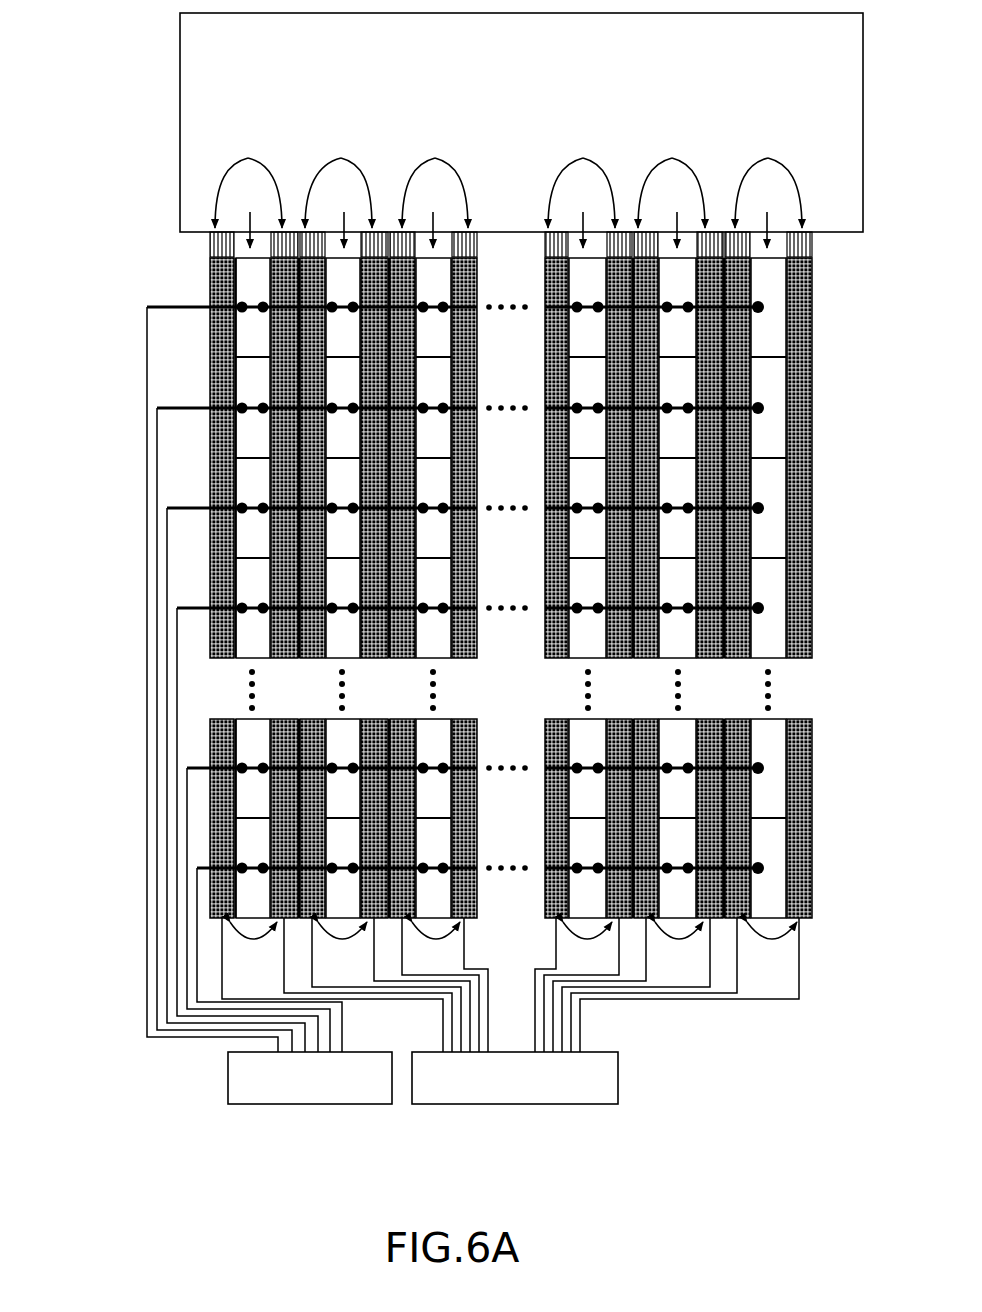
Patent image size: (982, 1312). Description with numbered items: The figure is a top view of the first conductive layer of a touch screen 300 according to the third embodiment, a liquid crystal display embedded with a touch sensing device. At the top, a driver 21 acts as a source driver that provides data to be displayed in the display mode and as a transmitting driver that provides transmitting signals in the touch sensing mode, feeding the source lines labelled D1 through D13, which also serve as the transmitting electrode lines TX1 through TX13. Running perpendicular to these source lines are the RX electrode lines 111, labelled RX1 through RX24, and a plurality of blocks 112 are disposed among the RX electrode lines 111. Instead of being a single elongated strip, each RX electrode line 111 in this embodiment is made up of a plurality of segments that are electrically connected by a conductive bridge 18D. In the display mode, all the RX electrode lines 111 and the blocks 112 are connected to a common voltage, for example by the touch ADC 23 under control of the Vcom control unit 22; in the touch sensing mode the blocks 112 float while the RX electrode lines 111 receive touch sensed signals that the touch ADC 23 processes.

The touch screen 300 is at (97, 40).
The driver 21 is at (180, 198).
The RX electrode line 111 is at (245, 292).
The block 112 is at (223, 350).
The conductive bridge 18D is at (286, 312).
The Vcom control unit 22 is at (511, 1104).
The touch analog-to-digital converter 23 is at (309, 1104).